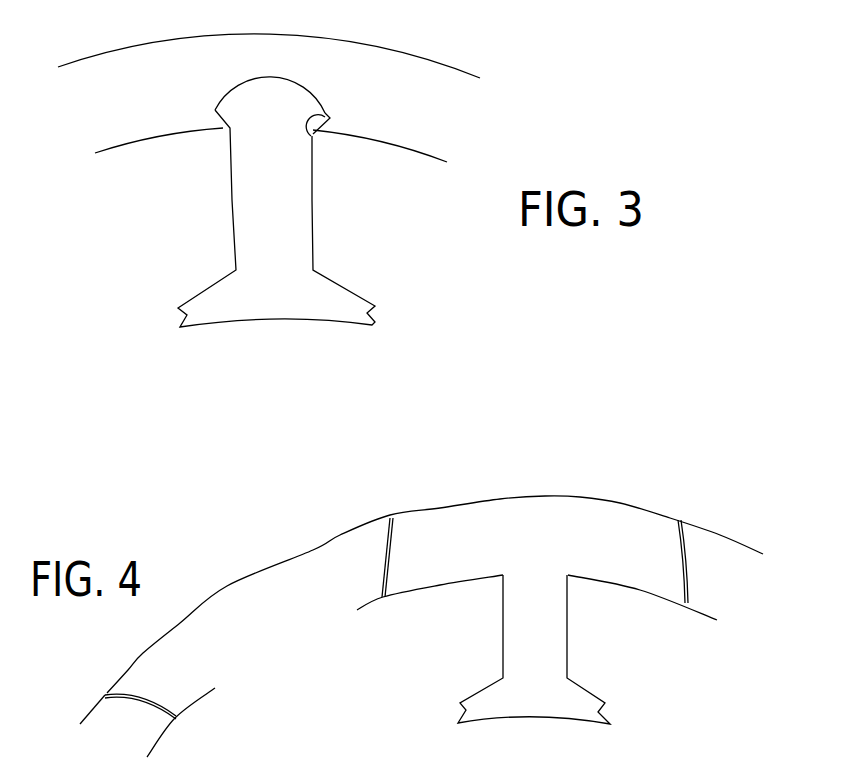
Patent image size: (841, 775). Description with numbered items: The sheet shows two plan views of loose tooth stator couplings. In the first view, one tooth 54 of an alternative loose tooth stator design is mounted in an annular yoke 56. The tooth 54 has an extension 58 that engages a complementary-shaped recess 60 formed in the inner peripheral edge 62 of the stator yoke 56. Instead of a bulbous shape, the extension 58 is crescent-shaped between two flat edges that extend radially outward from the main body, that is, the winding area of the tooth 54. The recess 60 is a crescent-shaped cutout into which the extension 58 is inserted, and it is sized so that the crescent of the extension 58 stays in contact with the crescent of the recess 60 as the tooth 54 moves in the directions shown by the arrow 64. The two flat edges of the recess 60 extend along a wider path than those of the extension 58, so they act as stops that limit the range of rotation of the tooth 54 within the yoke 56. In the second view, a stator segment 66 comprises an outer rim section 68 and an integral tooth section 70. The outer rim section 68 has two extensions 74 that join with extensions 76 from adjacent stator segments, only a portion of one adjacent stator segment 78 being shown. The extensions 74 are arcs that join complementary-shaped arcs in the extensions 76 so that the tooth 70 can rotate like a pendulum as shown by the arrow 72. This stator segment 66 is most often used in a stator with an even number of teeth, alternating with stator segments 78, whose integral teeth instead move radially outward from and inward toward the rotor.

In FIG. 3, the tooth 54 is at (293, 206).
In FIG. 3, the annular yoke 56 is at (392, 73).
In FIG. 3, the extension 58 is at (272, 97).
In FIG. 3, the recess 60 is at (312, 134).
In FIG. 3, the inner peripheral edge 62 is at (148, 141).
In FIG. 3, the arrow 64 is at (208, 347).
In FIG. 4, the stator segment 66 is at (576, 495).
In FIG. 4, the outer rim section 68 is at (491, 522).
In FIG. 4, the integral tooth section 70 is at (557, 642).
In FIG. 4, the arrow 72 is at (427, 678).
In FIG. 4, the extensions 74 is at (417, 525).
In FIG. 4, the extensions 76 is at (358, 547).
In FIG. 4, the adjacent stator segment 78 is at (226, 578).